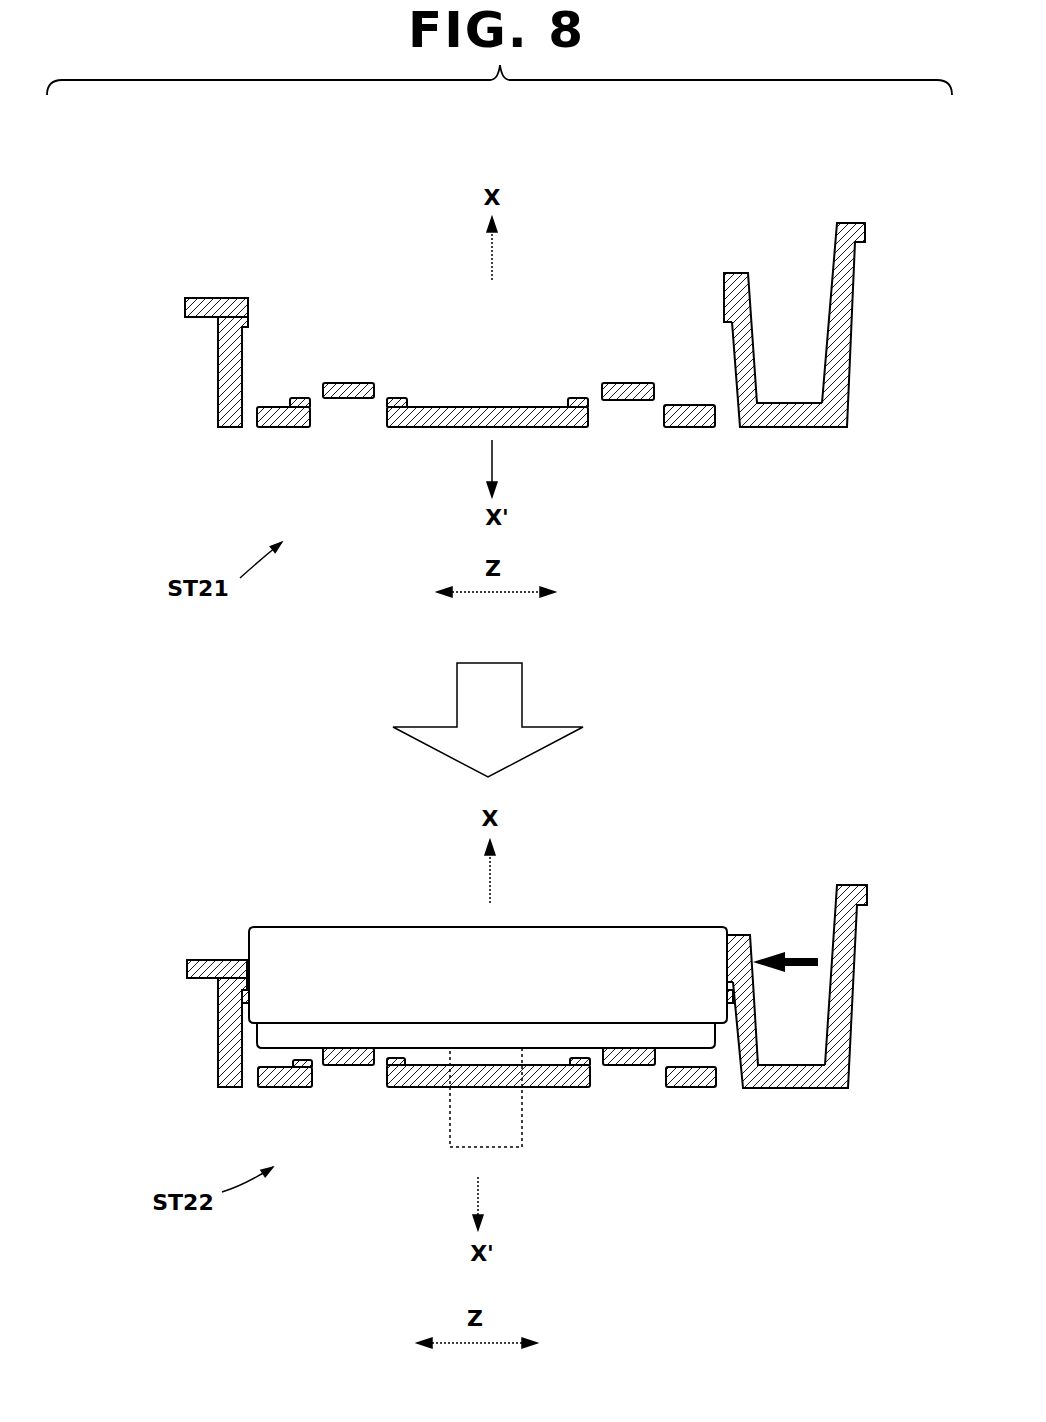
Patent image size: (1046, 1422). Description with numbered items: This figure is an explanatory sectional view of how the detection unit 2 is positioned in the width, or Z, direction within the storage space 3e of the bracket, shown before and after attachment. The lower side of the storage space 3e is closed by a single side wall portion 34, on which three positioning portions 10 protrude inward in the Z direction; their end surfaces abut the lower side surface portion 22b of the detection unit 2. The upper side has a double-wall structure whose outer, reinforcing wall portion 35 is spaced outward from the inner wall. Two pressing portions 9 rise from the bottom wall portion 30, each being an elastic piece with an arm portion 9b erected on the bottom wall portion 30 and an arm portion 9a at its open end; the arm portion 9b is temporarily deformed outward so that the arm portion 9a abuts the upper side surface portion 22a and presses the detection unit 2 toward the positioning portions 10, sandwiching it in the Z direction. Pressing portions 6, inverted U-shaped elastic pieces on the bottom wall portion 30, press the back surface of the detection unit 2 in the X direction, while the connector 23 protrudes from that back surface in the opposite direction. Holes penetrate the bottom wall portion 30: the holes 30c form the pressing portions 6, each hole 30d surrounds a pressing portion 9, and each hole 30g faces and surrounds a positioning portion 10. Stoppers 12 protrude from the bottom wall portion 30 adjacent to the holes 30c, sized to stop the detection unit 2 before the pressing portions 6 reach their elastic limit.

The detection unit 2 is at (485, 939).
The storage space 3e is at (562, 303).
The pressing portion 6 is at (350, 383).
The pressing portion 9 is at (785, 639).
The arm portion 9a is at (722, 305).
The arm portion 9b is at (752, 355).
The positioning portion 10 is at (232, 684).
The stopper 12 is at (300, 398).
The upper side surface portion 22a is at (735, 1000).
The lower side surface portion 22b is at (238, 1002).
The connector 23 is at (507, 1150).
The bottom wall portion 30 is at (494, 786).
The hole 30c is at (597, 417).
The hole 30d is at (732, 427).
The hole 30g is at (250, 425).
The side wall portion 34 is at (215, 375).
The wall portion 35 is at (855, 303).